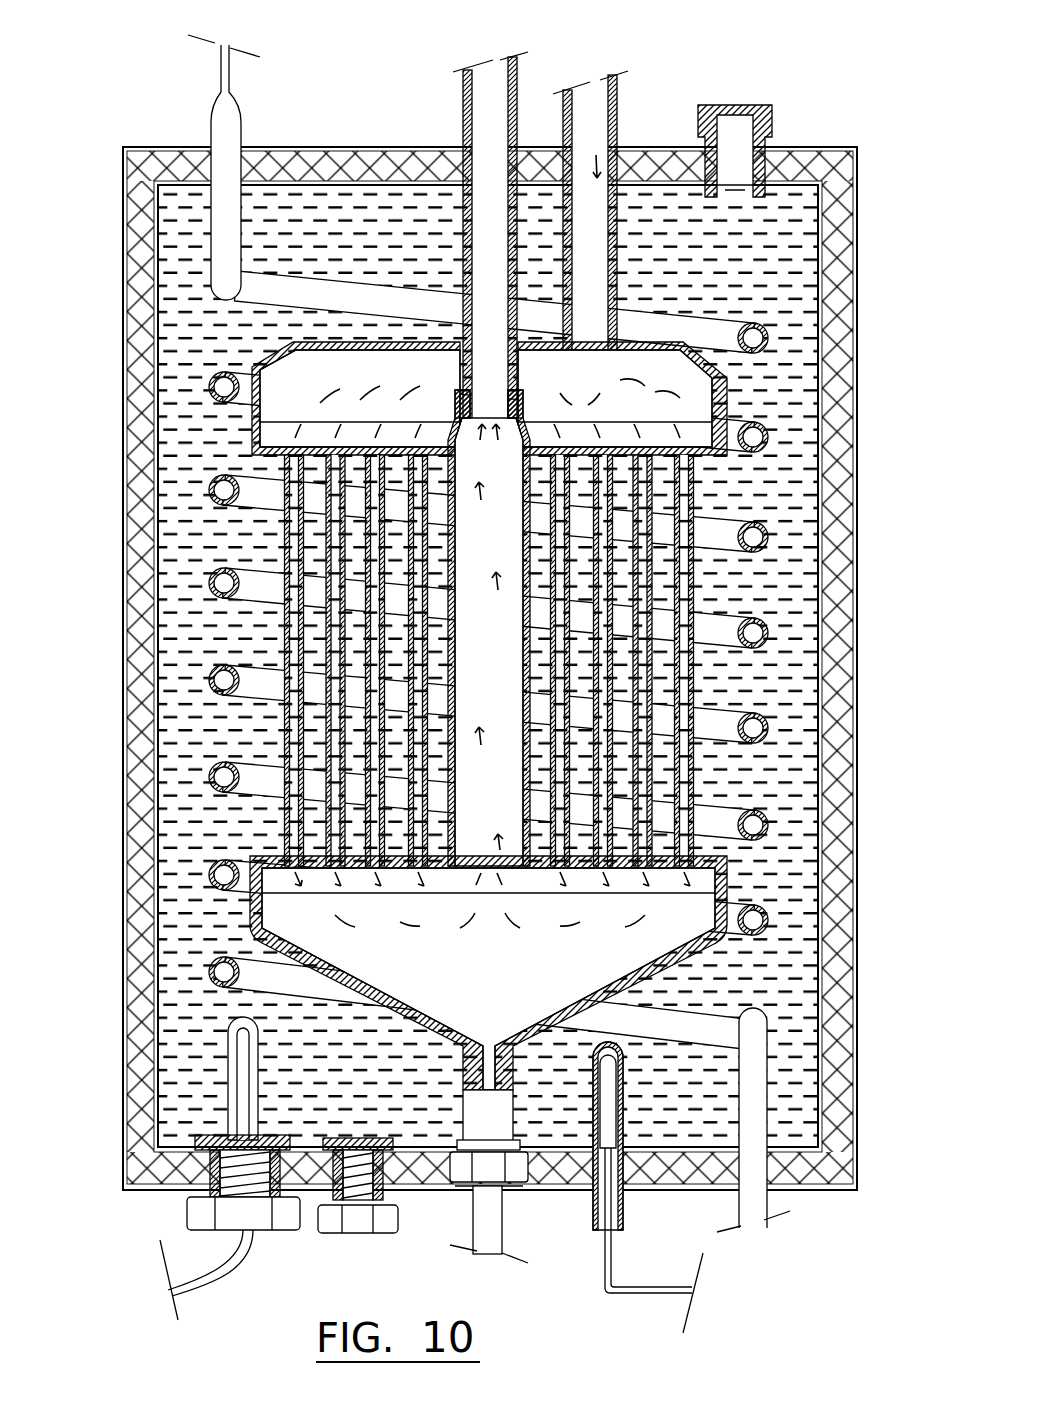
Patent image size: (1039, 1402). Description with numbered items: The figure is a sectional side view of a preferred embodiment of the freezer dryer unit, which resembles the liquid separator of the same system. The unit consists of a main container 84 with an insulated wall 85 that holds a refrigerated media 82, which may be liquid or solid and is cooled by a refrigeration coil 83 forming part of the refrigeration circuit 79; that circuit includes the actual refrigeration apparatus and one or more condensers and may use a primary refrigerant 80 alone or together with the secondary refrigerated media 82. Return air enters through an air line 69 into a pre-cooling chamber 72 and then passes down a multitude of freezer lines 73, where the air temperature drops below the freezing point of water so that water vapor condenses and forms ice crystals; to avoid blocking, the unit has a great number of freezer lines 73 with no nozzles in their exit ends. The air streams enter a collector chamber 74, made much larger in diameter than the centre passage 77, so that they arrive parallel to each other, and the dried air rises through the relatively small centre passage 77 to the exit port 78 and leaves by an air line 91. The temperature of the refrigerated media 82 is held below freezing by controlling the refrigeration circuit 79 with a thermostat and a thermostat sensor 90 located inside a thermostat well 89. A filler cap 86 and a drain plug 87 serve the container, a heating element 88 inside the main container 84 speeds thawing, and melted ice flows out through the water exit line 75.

The air line 69 is at (585, 88).
The pre-cooling chamber 72 is at (324, 392).
The freezer lines 73 is at (285, 542).
The collector chamber 74 is at (503, 985).
The water exit line 75 is at (484, 1248).
The centre passage 77 is at (504, 670).
The exit port 78 is at (504, 395).
The refrigeration circuit 79 is at (217, 62).
The primary refrigerant 80 is at (760, 437).
The refrigerated media 82 is at (232, 345).
The refrigeration coil 83 is at (762, 534).
The main container 84 is at (152, 147).
The insulated wall 85 is at (140, 784).
The filler cap 86 is at (750, 104).
The drain plug 87 is at (358, 1222).
The heating element 88 is at (232, 1072).
The thermostat well 89 is at (620, 1046).
The thermostat sensor 90 is at (610, 1100).
The air line 91 is at (485, 66).